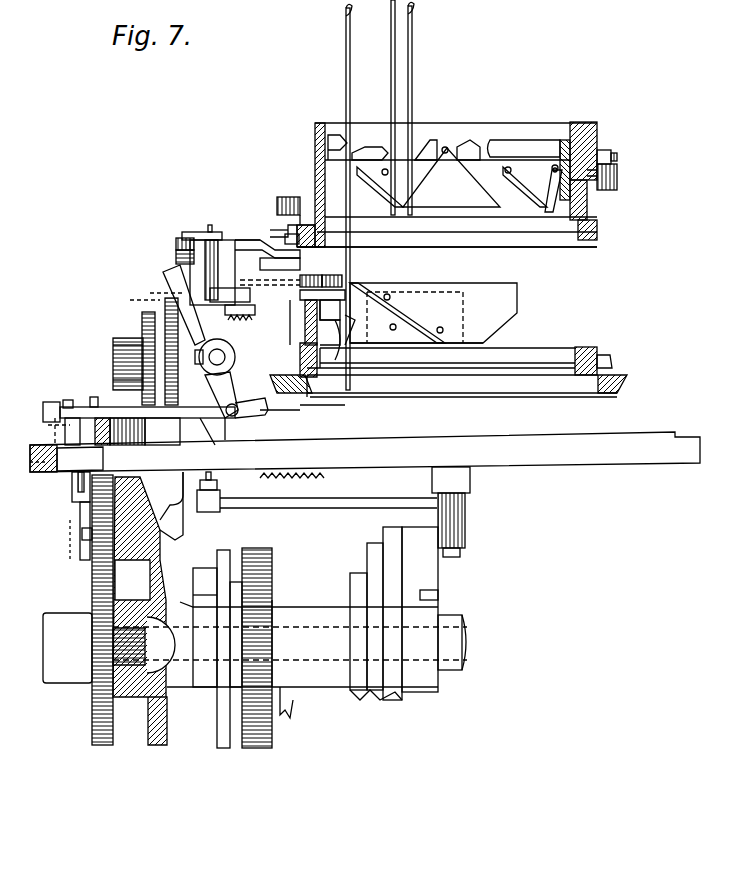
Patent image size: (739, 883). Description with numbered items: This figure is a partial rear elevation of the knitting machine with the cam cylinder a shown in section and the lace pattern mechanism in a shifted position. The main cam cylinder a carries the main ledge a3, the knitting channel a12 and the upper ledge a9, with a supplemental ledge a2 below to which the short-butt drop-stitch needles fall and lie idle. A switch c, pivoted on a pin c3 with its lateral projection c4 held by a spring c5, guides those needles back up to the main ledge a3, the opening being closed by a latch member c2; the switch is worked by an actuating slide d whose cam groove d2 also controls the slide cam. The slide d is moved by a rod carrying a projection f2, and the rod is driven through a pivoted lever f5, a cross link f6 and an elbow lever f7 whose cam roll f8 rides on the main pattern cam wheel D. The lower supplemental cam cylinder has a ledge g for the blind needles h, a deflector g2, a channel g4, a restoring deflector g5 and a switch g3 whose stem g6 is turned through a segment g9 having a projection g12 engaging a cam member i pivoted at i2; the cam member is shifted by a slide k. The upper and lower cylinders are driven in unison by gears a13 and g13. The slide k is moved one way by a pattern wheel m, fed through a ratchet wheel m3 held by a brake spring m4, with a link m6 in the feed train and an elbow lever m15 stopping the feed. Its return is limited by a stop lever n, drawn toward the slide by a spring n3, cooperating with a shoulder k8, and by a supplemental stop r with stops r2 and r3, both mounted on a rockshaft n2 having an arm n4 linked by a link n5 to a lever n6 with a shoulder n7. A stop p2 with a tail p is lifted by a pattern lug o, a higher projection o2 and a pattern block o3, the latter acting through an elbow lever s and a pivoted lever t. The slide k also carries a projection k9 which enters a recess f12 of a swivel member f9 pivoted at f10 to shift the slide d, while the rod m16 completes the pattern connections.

The main cam cylinder a is at (315, 136).
The main ledge a3 is at (328, 163).
The knitting channel a12 is at (447, 148).
The upper ledge a9 is at (520, 140).
The latch member c2 is at (565, 140).
The pivot pin c3 is at (590, 115).
The spring c5 is at (611, 157).
The lateral projection c4 is at (608, 190).
The switch c is at (558, 212).
The supplemental ledge a2 is at (597, 232).
The gear a13 is at (597, 247).
The cam groove d2 is at (283, 197).
The actuating device d is at (272, 230).
The projection f2 is at (195, 232).
The recess f12 is at (212, 227).
The slide member k is at (245, 269).
The pivot f10 is at (176, 242).
The swivel member f9 is at (176, 258).
The projection k9 is at (260, 282).
The shoulder k8 is at (162, 289).
The stop r3 is at (255, 315).
The spring n3 is at (240, 322).
The cam member i is at (310, 275).
The pivot i2 is at (335, 270).
The blind needles h is at (340, 270).
The deflector g5 is at (433, 313).
The segment g9 is at (370, 290).
The deflector g2 is at (416, 329).
The supplemental ledge g is at (578, 347).
The gear g13 is at (612, 360).
The channel g4 is at (385, 375).
The projection g12 is at (300, 352).
The stem g6 is at (305, 393).
The switch g3 is at (340, 360).
The pattern wheel m is at (125, 340).
The ratchet wheel m3 is at (120, 352).
The brake spring m4 is at (135, 360).
The stop r2 is at (142, 320).
The supplemental stop r is at (147, 348).
The stop lever n is at (170, 280).
The link m6 is at (113, 385).
The stop p2 is at (90, 400).
The pivoted lever t is at (63, 412).
The elbow lever s is at (48, 428).
The shoulder n7 is at (140, 445).
The lever n6 is at (180, 440).
The rockshaft n2 is at (202, 442).
The link n5 is at (222, 440).
The arm n4 is at (240, 425).
The elbow lever m15 is at (290, 420).
The rod m16 is at (325, 430).
The pattern block o3 is at (72, 490).
The tail p is at (78, 500).
The projection o2 is at (82, 540).
The pattern lug o is at (100, 585).
The main pattern cam wheel D is at (394, 613).
The pivoted lever f5 is at (217, 485).
The link f6 is at (197, 505).
The elbow lever f7 is at (330, 508).
The cam roll f8 is at (465, 530).